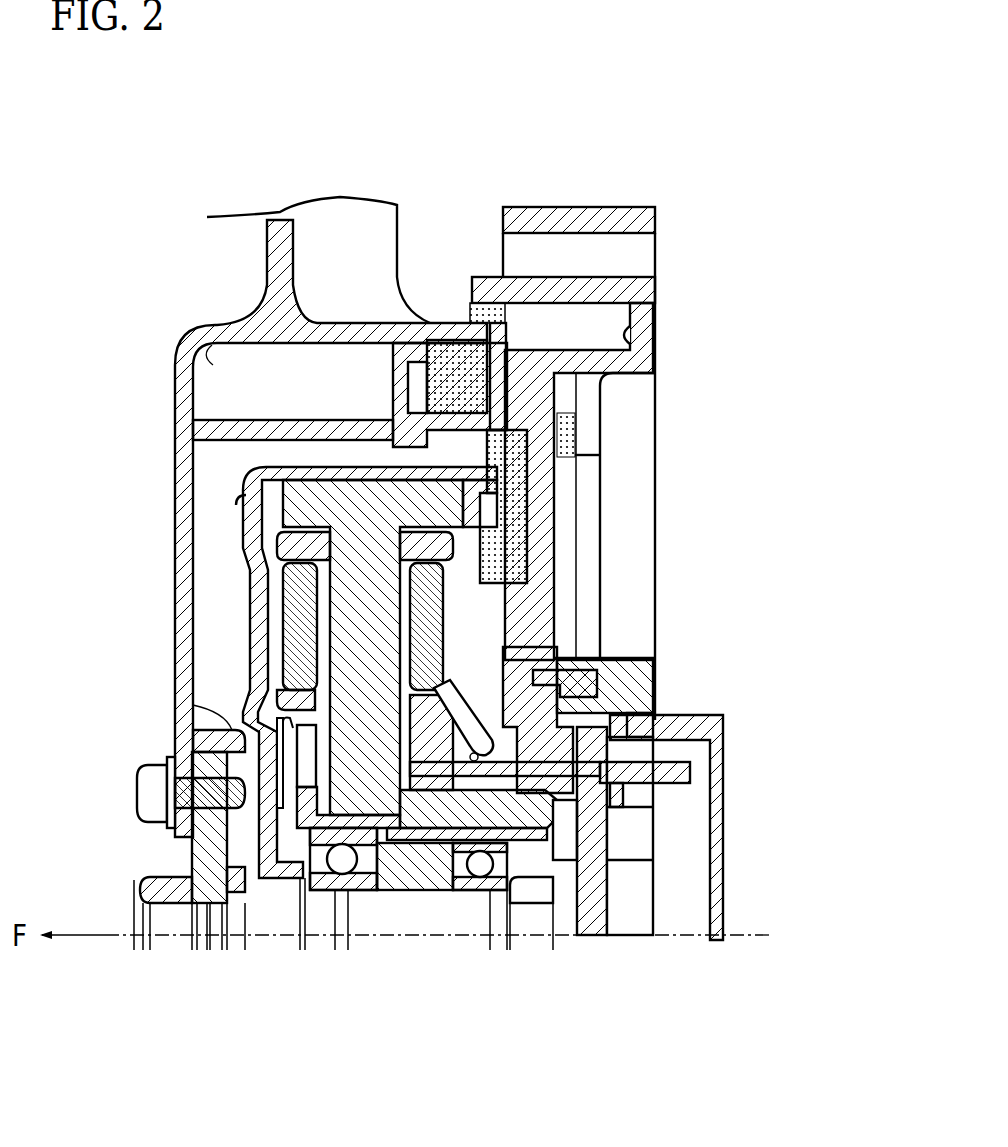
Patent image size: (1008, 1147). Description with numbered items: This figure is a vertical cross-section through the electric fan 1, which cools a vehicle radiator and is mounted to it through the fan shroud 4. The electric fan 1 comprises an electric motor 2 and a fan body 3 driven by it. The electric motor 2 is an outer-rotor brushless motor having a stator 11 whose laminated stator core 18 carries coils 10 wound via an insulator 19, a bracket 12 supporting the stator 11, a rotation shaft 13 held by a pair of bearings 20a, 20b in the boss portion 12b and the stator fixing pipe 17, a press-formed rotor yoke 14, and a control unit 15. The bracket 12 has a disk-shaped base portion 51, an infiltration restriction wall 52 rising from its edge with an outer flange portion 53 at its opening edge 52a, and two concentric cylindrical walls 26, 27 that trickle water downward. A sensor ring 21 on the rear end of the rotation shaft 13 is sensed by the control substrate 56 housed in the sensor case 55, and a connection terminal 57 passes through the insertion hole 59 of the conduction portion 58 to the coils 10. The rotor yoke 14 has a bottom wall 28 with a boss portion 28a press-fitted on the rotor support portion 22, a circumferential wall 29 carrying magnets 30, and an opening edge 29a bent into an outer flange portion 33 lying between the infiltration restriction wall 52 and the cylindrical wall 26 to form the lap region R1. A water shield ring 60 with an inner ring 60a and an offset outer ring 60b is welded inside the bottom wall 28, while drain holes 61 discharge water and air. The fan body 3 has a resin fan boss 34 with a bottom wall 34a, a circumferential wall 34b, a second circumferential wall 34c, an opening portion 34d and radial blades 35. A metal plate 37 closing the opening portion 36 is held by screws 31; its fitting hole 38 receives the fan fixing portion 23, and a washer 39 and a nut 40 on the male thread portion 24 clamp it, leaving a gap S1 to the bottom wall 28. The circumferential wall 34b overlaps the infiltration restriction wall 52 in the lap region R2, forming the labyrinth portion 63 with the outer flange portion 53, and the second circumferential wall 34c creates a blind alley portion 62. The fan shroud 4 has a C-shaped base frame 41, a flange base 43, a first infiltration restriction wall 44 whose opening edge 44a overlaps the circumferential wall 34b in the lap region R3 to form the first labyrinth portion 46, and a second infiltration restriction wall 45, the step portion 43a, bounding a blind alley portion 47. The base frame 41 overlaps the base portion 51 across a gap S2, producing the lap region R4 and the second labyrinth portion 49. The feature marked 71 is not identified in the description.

The electric fan 1 is at (716, 120).
The electric motor 2 is at (215, 660).
The fan body 3 is at (165, 346).
The fan shroud 4 is at (658, 250).
The coils 10 is at (257, 587).
The stator 11 is at (255, 632).
The bracket 12 is at (560, 565).
The boss portion 12b is at (652, 738).
The rotation shaft 13 is at (453, 935).
The rotor yoke 14 is at (257, 842).
The control unit 15 is at (725, 832).
The stator fixing pipe 17 is at (547, 903).
The stator core 18 is at (320, 772).
The insulator 19 is at (522, 525).
The bearing 20a is at (477, 880).
The bearing 20b is at (333, 892).
The sensor ring 21 is at (580, 897).
The rotor support portion 22 is at (283, 930).
The fan fixing portion 23 is at (207, 900).
The male thread portion 24 is at (133, 937).
The cylindrical wall 26 is at (566, 449).
The cylindrical wall 27 is at (484, 600).
The bottom wall 28 is at (243, 698).
The boss portion 28a is at (268, 885).
The circumferential wall 29 is at (330, 478).
The opening edge 29a is at (463, 488).
The magnets 30 is at (265, 478).
The screws 31 is at (137, 790).
The outer flange portion 33 is at (602, 392).
The fan boss 34 is at (174, 565).
The bottom wall 34a is at (178, 722).
The circumferential wall 34b is at (362, 322).
The second circumferential wall 34c is at (282, 420).
The opening portion 34d is at (520, 300).
The blades 35 is at (312, 220).
The opening portion 36 is at (190, 760).
The metal plate 37 is at (140, 885).
The fitting hole 38 is at (175, 905).
The washer 39 is at (148, 900).
The nut 40 is at (147, 902).
The base frame 41 is at (578, 414).
The flange base 43 is at (520, 380).
The step portion 43a is at (642, 370).
The first infiltration restriction wall 44 is at (597, 278).
The opening edge 44a is at (492, 305).
The second infiltration restriction wall 45 is at (516, 375).
The first labyrinth portion 46 is at (575, 330).
The blind alley portion 47 is at (632, 335).
The second labyrinth portion 49 is at (540, 462).
The base portion 51 is at (558, 628).
The infiltration restriction wall 52 is at (457, 410).
The opening edge 52a is at (383, 447).
The outer flange portion 53 is at (418, 362).
The sensor case 55 is at (655, 680).
The control substrate 56 is at (608, 905).
The connection terminal 57 is at (692, 772).
The conduction portion 58 is at (548, 748).
The insertion hole 59 is at (478, 761).
The water shield ring 60 is at (289, 747).
The inner ring 60a is at (305, 792).
The outer ring 60b is at (291, 738).
The drain hole 61 is at (298, 707).
The blind alley portion 62 is at (212, 345).
The labyrinth portion 63 is at (560, 352).
The cover top surface 71 is at (600, 207).
The lap region R1 is at (563, 566).
The lap region R2 is at (474, 335).
The lap region R3 is at (512, 340).
The lap region R4 is at (612, 440).
The gap S1 is at (230, 643).
The gap S2 is at (505, 440).